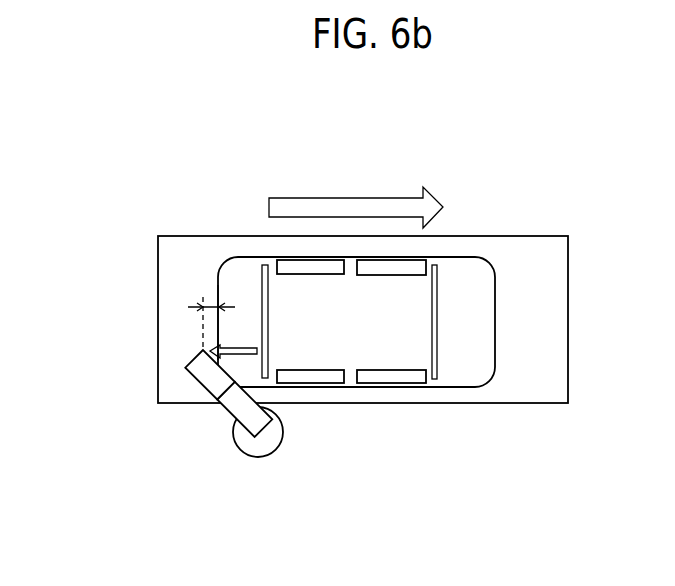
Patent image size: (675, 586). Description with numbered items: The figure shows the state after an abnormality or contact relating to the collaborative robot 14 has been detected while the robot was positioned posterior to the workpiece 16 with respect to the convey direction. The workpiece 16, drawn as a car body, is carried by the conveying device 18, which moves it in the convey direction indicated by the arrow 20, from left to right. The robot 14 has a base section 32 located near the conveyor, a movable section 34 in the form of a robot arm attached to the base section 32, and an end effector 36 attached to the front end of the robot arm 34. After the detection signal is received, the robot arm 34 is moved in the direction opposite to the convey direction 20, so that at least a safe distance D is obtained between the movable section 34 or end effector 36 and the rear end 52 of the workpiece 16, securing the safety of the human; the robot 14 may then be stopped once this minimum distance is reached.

The collaborative robot 14 is at (230, 466).
The workpiece 16 is at (495, 292).
The conveying device 18 is at (158, 305).
The arrow 20 is at (328, 197).
The base section 32 is at (283, 432).
The movable section 34 is at (226, 406).
The end effector 36 is at (188, 372).
The rear end 52 is at (218, 272).